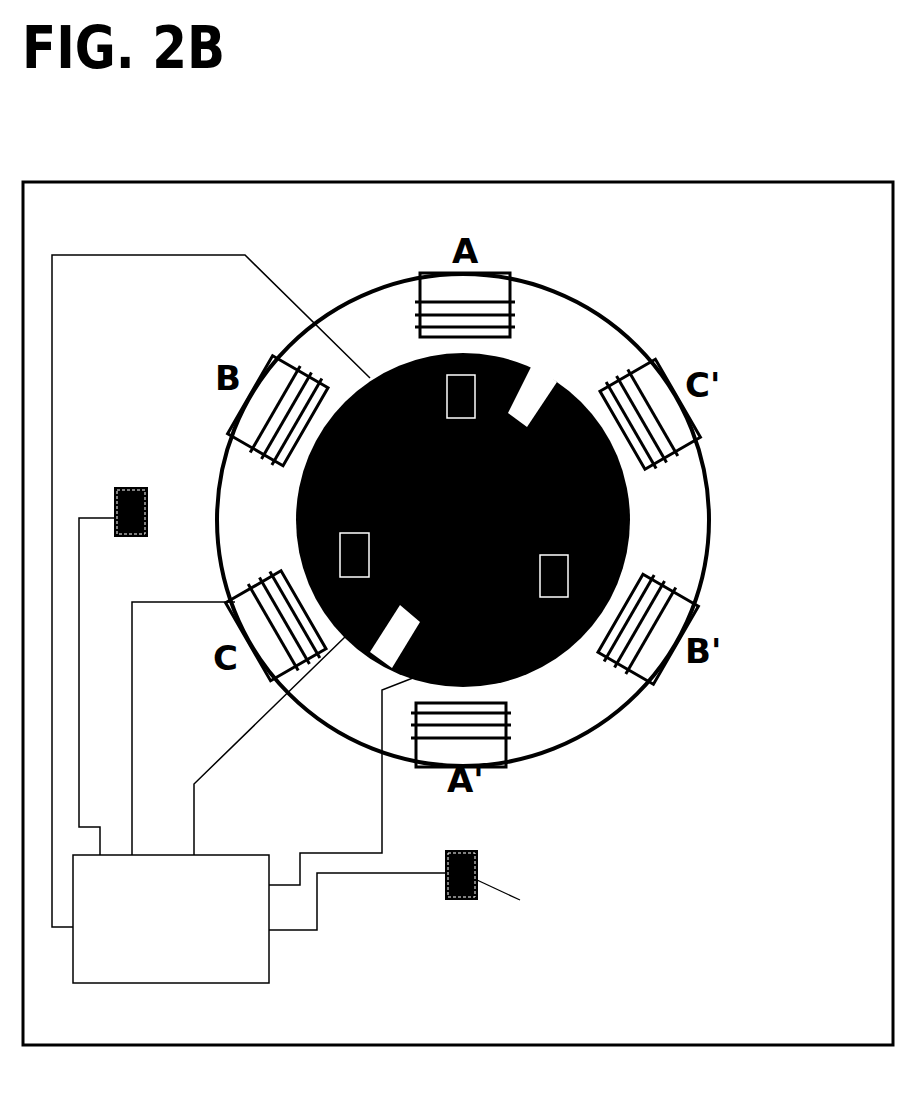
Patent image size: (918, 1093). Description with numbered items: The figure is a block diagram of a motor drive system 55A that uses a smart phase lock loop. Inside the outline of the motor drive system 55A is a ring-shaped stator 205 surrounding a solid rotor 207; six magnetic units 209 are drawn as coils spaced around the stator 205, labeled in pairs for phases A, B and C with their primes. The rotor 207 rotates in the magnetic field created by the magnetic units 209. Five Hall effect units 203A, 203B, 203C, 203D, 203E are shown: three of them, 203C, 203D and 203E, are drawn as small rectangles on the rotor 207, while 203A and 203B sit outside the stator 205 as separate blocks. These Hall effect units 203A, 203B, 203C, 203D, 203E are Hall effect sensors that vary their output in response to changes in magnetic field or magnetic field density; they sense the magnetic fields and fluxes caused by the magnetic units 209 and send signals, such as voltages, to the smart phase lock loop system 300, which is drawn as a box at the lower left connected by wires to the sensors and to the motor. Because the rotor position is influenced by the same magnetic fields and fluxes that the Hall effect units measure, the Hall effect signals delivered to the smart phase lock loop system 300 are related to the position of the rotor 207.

The motor drive system 55A is at (172, 182).
The Hall effect unit 203A is at (457, 900).
The Hall effect unit 203B is at (129, 537).
The Hall effect unit 203C is at (298, 520).
The Hall effect unit 203D is at (628, 555).
The Hall effect unit 203E is at (503, 355).
The stator 205 is at (344, 696).
The rotor 207 is at (630, 503).
The magnetic units 209 is at (667, 638).
The smart phase lock loop system 300 is at (167, 983).